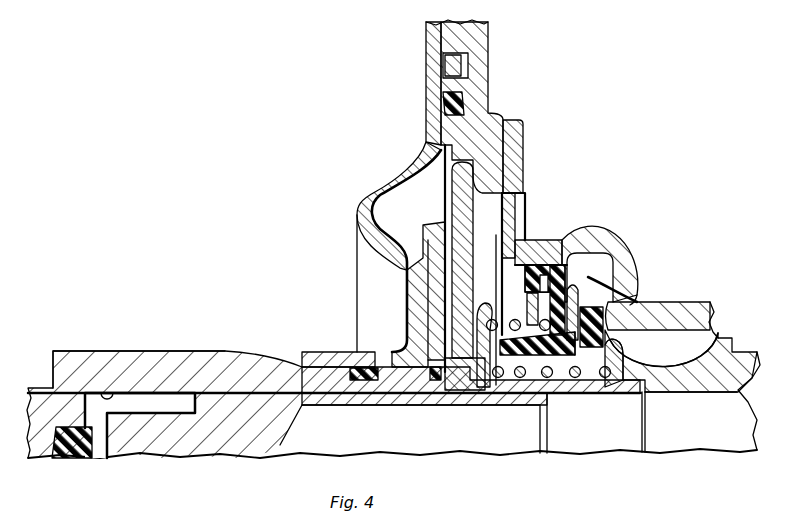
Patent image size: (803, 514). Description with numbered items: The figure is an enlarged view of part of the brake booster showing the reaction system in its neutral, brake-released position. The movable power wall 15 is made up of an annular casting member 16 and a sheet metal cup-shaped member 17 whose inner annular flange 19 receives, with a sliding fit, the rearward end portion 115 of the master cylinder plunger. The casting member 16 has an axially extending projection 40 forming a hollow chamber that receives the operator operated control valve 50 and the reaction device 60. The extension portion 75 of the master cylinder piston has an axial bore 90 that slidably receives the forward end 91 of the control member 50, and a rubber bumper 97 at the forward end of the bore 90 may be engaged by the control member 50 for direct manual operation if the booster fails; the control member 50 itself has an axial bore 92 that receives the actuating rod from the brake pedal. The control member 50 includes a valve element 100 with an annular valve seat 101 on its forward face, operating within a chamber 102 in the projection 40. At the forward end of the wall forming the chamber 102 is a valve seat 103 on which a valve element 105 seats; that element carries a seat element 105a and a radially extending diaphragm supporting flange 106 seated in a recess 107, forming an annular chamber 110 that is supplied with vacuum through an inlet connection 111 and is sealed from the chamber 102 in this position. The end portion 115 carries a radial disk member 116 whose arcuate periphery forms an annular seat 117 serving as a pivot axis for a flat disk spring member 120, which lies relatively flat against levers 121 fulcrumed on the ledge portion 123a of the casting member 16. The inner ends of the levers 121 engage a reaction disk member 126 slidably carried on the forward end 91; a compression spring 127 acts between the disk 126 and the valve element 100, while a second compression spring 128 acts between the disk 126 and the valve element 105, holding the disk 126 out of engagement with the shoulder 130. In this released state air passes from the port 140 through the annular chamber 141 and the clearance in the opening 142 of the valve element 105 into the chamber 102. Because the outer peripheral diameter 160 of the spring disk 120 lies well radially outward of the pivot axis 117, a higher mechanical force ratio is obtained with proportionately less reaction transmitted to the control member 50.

The power wall 15 is at (487, 38).
The casting member 16 is at (480, 62).
The cup-shaped member 17 is at (428, 40).
The inner annular flange 19 is at (315, 358).
The axially extending projection 40 is at (700, 307).
The operator operated control valve 50 is at (707, 380).
The reaction device 60 is at (440, 298).
The extension portion 75 is at (68, 365).
The axial bore 90 is at (112, 396).
The forward end 91 is at (180, 438).
The axial bore 92 is at (755, 422).
The rubber bumper 97 is at (65, 452).
The valve element 100 is at (733, 341).
The annular valve seat 101 is at (622, 356).
The chamber 102 is at (680, 341).
The valve seat 103 is at (610, 325).
The valve element 105 is at (593, 281).
The seat element 105a is at (604, 315).
The diaphragm supporting flange 106 is at (578, 290).
The recess 107 is at (520, 238).
The annular chamber 110 is at (583, 283).
The inlet connection 111 is at (630, 290).
The rearward end portion 115 is at (410, 380).
The radial member 116 is at (420, 320).
The annular seat 117 is at (387, 193).
The flat disk spring member 120 is at (450, 362).
The levers 121 is at (463, 178).
The ledge portion 123a is at (522, 158).
The reaction disk member 126 is at (488, 386).
The compression spring 127 is at (526, 396).
The second compression spring 128 is at (581, 276).
The shoulder 130 is at (530, 393).
The port 140 is at (512, 200).
The annular chamber 141 is at (418, 268).
The opening 142 is at (581, 378).
The outer peripheral diameter 160 is at (432, 176).